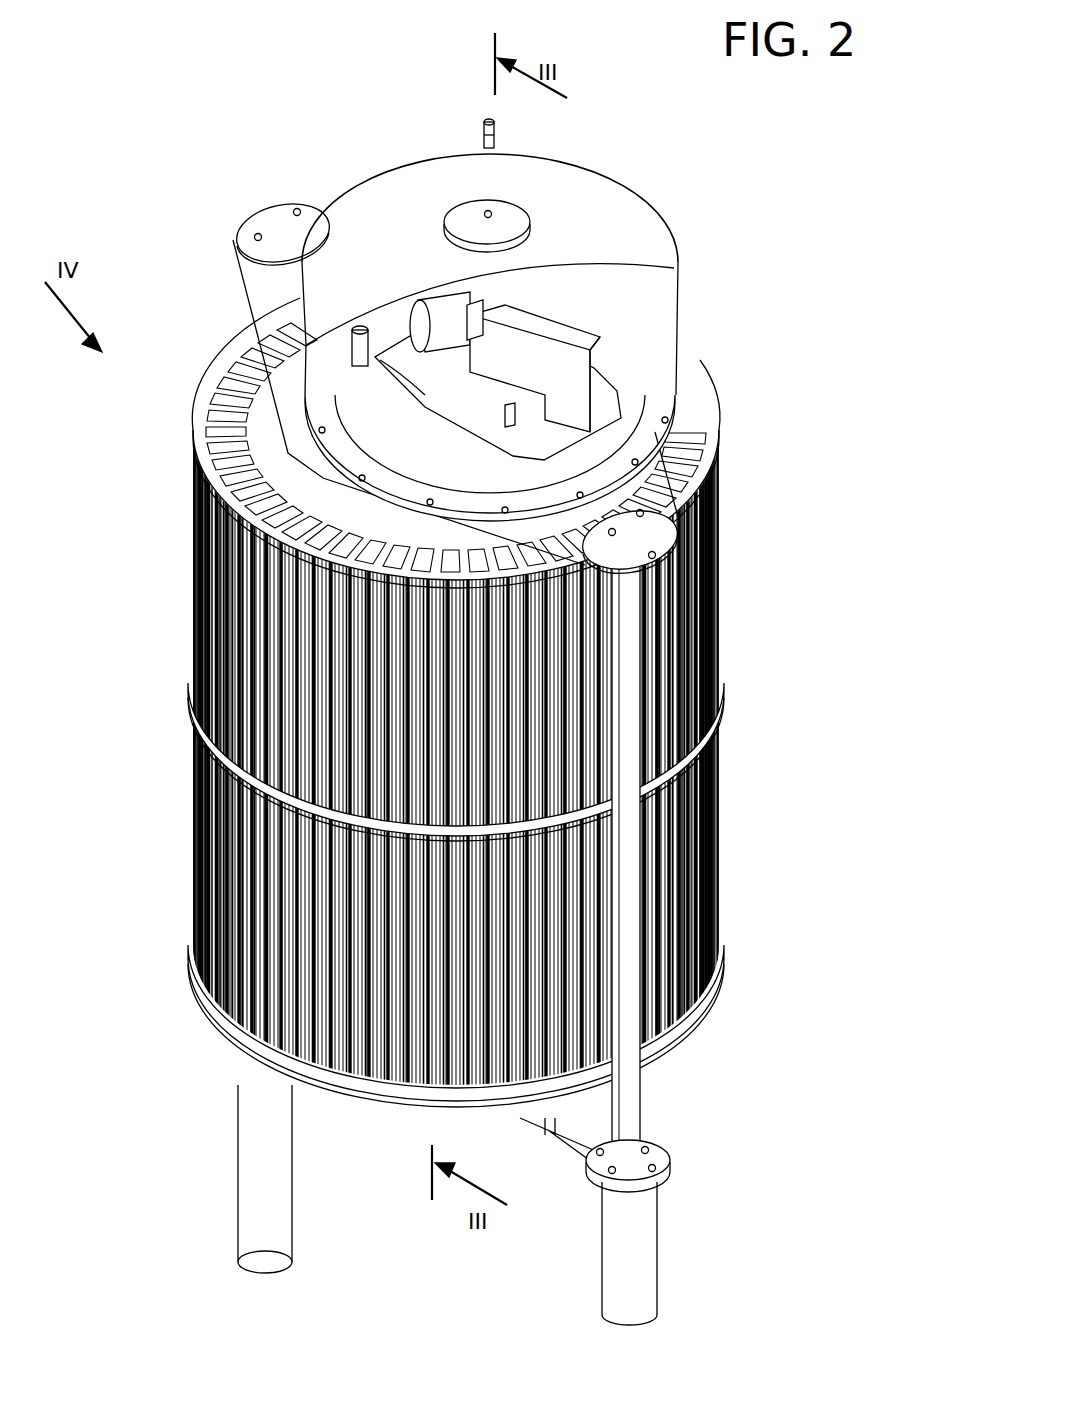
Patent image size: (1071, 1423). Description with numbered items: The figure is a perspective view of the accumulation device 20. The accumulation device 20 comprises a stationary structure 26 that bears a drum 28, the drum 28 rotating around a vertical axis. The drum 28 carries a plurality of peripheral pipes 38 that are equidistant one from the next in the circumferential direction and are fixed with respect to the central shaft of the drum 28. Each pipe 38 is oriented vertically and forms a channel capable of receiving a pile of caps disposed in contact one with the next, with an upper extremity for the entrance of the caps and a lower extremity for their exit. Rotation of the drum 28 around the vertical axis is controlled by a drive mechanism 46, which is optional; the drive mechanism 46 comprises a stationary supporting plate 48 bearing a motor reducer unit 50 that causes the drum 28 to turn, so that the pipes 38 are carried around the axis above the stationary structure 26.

The accumulation device 20 is at (456, 722).
The stationary structure 26 is at (641, 1089).
The drum 28 is at (456, 769).
The peripheral pipes 38 is at (226, 762).
The drive mechanism 46 is at (656, 210).
The stationary supporting plate 48 is at (462, 440).
The motor reducer unit 50 is at (556, 315).